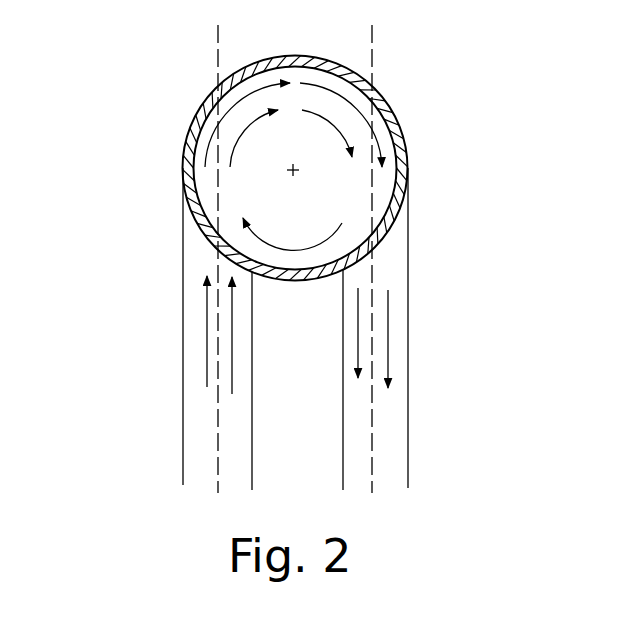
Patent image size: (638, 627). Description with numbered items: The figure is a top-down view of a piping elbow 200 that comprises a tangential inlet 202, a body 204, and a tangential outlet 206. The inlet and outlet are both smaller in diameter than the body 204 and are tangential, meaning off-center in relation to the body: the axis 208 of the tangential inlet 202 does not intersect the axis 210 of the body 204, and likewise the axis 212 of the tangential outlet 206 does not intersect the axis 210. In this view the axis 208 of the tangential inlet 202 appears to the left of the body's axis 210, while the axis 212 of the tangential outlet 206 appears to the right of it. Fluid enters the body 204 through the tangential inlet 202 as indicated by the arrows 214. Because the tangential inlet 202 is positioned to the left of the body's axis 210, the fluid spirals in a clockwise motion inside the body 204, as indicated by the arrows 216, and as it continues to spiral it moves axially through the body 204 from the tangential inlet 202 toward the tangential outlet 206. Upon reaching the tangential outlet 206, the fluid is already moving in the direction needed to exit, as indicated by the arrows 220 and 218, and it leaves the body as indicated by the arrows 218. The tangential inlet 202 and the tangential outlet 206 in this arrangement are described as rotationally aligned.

The piping elbow 200 is at (291, 260).
The tangential inlet 202 is at (185, 447).
The body 204 is at (290, 57).
The tangential outlet 206 is at (410, 440).
The axis of the tangential inlet 208 is at (220, 402).
The axis of the body 210 is at (288, 170).
The axis of the tangential outlet 212 is at (373, 362).
The arrows 214 is at (232, 363).
The arrows 216 is at (231, 150).
The arrows 218 is at (358, 288).
The arrows 220 is at (303, 109).